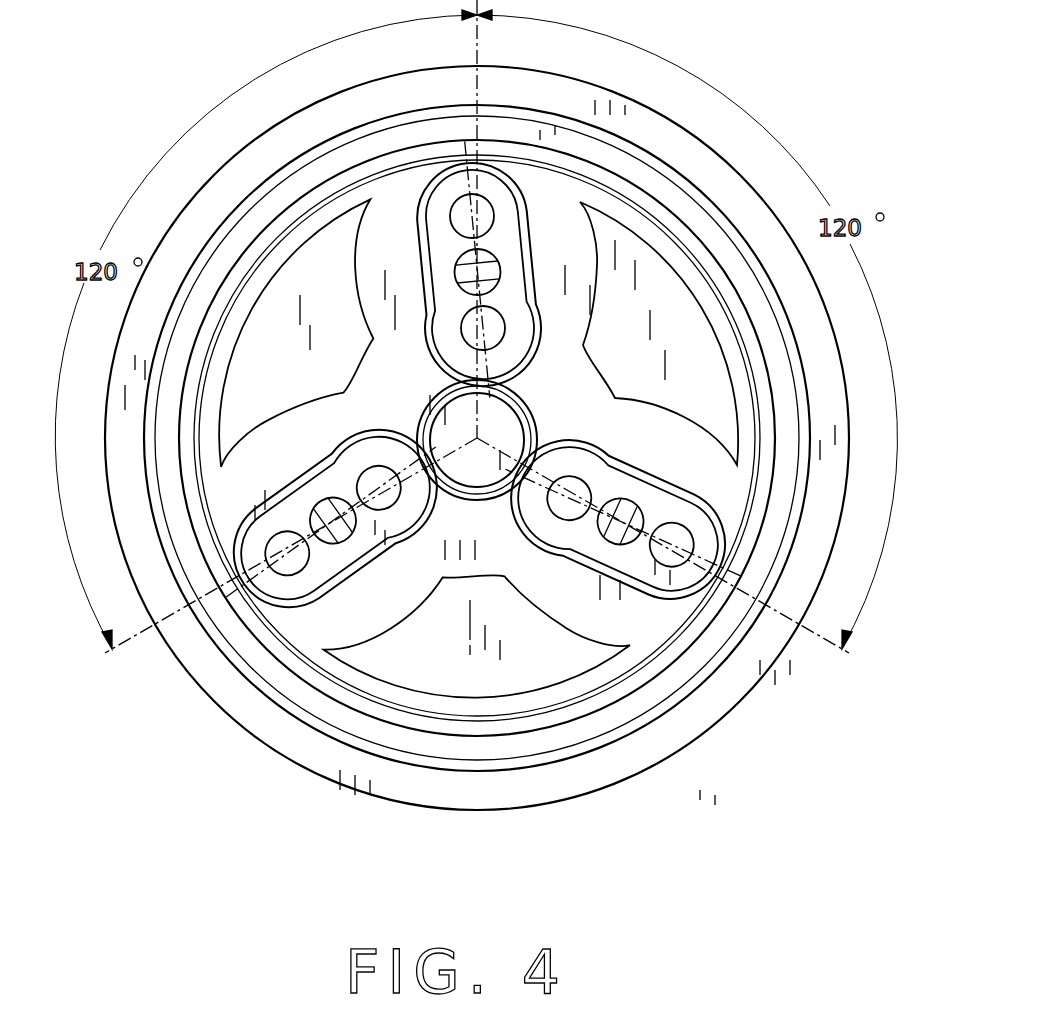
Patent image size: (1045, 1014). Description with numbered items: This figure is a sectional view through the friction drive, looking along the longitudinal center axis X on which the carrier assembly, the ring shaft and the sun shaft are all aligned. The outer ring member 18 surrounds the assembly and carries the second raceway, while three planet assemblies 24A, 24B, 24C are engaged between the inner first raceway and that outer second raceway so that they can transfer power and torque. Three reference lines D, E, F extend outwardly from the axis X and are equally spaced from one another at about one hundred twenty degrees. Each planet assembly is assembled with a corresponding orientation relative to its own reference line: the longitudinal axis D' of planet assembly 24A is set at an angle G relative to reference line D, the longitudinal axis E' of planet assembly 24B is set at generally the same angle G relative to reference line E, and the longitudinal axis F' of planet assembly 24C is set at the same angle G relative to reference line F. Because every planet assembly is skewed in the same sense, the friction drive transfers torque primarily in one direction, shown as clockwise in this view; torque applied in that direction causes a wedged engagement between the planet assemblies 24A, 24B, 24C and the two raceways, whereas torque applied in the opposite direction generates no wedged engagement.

The outer ring member 18 is at (828, 381).
The planet assembly 24A is at (430, 270).
The planet assembly 24B is at (640, 605).
The planet assembly 24C is at (433, 745).
The longitudinal center axis X is at (478, 438).
The reference line D is at (513, 219).
The reference line E is at (663, 570).
The reference line F is at (285, 569).
The longitudinal axis of planet assembly D' is at (438, 107).
The longitudinal axis of planet assembly E' is at (761, 561).
The longitudinal axis of planet assembly F' is at (228, 684).
The angle G is at (718, 530).